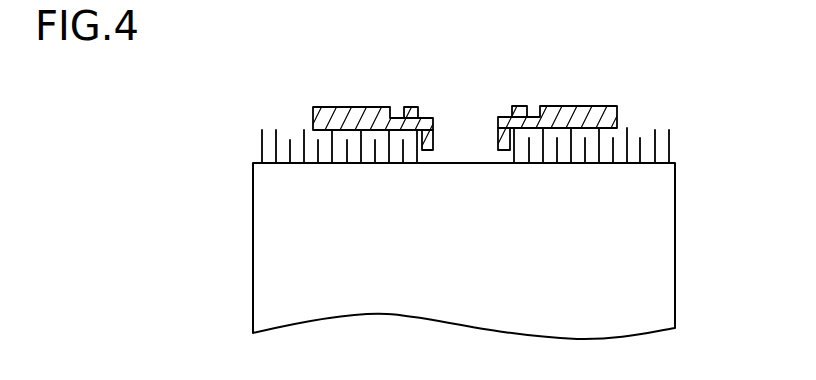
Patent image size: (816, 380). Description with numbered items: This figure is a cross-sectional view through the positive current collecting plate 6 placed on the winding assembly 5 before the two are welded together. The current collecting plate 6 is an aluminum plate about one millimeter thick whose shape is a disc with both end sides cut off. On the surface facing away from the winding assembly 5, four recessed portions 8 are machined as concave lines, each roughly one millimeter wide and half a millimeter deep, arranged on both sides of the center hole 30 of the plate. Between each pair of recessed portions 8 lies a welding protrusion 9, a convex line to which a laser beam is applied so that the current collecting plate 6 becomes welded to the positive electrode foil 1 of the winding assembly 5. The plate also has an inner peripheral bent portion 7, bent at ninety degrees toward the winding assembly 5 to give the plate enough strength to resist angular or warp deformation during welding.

The positive electrode foil 1 is at (261, 141).
The winding assembly 5 is at (232, 258).
The current collecting plate 6 is at (318, 107).
The inner peripheral bent portion 7 is at (437, 128).
The recessed portions 8 is at (390, 107).
The welding protrusions 9 is at (407, 107).
The center hole 30 is at (466, 136).